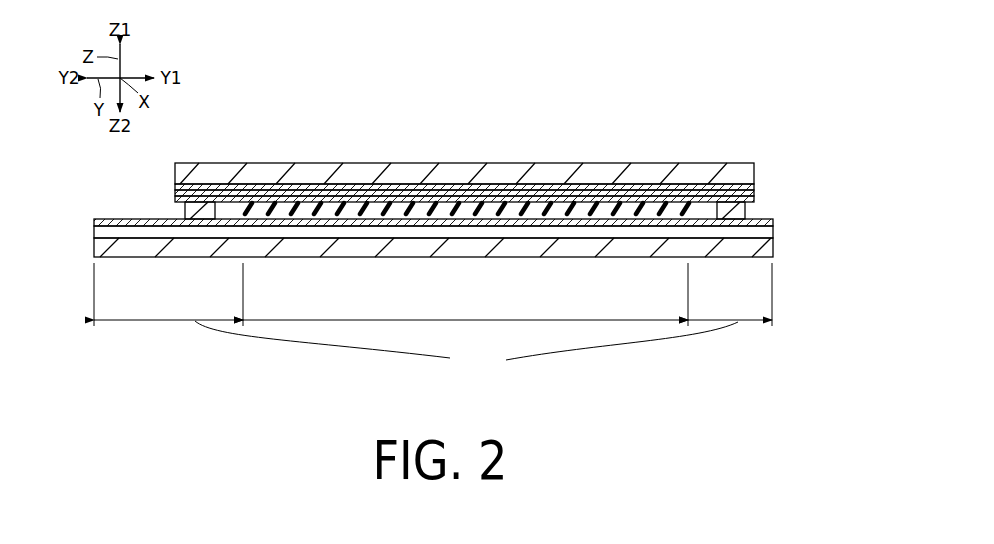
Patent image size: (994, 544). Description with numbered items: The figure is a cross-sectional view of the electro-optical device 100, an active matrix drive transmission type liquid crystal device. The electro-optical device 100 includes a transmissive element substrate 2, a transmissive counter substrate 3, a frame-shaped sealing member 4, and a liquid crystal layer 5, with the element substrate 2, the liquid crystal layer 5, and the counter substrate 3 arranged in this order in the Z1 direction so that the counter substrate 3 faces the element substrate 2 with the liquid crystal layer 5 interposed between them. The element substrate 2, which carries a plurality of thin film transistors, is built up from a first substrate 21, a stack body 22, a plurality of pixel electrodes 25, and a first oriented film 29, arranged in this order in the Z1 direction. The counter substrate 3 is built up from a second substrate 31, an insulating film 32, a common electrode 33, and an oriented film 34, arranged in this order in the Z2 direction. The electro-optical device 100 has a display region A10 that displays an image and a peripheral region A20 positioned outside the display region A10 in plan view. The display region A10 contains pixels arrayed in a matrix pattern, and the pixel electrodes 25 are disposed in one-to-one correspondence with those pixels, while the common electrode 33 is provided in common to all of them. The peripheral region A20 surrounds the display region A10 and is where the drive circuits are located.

The electro-optical device 100 is at (760, 120).
The element substrate 2 is at (445, 270).
The counter substrate 3 is at (464, 153).
The sealing member 4 is at (731, 205).
The liquid crystal layer 5 is at (701, 212).
The first substrate 21 is at (287, 252).
The stack body 22 is at (334, 233).
The pixel electrodes 25 is at (392, 221).
The first oriented film 29 is at (699, 252).
The second substrate 31 is at (243, 167).
The insulating film 32 is at (298, 187).
The common electrode 33 is at (343, 193).
The oriented film 34 is at (382, 199).
The display region A10 is at (433, 304).
The peripheral region A20 is at (466, 347).